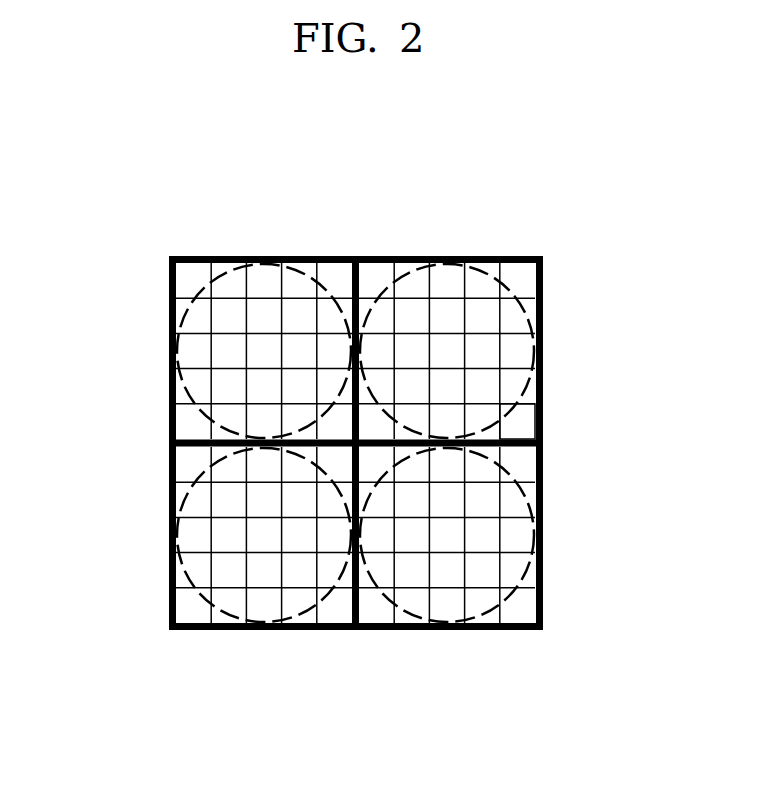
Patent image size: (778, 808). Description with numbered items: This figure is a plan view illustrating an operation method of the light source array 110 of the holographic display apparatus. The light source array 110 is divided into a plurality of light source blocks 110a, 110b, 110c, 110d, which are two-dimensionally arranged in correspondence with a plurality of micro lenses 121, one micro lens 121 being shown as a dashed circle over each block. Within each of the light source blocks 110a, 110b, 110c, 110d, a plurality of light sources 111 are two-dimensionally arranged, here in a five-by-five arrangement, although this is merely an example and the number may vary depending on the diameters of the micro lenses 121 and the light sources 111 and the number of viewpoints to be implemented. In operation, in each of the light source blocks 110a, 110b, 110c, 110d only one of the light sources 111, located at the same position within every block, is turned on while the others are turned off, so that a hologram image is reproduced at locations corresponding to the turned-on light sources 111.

The light source array 110 is at (357, 228).
The light source block 110a is at (171, 282).
The light source block 110b is at (543, 281).
The light source block 110c is at (543, 606).
The light source block 110d is at (171, 604).
The light source 111 is at (523, 425).
The micro lens 121 is at (497, 268).